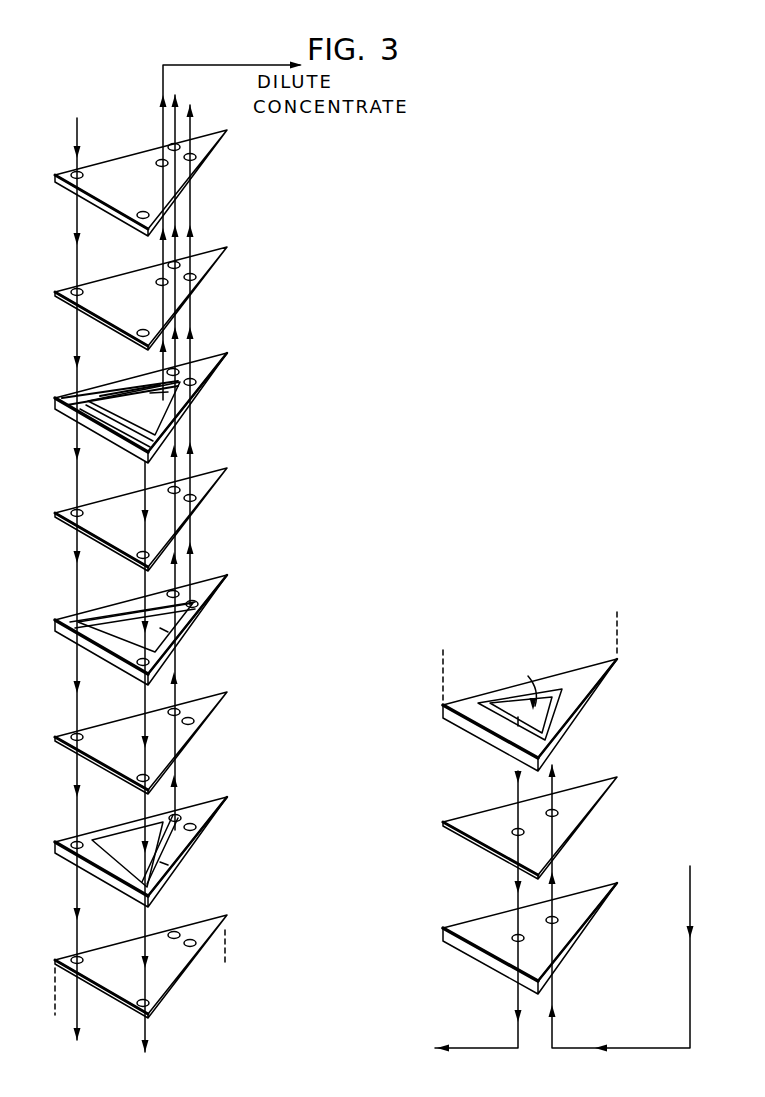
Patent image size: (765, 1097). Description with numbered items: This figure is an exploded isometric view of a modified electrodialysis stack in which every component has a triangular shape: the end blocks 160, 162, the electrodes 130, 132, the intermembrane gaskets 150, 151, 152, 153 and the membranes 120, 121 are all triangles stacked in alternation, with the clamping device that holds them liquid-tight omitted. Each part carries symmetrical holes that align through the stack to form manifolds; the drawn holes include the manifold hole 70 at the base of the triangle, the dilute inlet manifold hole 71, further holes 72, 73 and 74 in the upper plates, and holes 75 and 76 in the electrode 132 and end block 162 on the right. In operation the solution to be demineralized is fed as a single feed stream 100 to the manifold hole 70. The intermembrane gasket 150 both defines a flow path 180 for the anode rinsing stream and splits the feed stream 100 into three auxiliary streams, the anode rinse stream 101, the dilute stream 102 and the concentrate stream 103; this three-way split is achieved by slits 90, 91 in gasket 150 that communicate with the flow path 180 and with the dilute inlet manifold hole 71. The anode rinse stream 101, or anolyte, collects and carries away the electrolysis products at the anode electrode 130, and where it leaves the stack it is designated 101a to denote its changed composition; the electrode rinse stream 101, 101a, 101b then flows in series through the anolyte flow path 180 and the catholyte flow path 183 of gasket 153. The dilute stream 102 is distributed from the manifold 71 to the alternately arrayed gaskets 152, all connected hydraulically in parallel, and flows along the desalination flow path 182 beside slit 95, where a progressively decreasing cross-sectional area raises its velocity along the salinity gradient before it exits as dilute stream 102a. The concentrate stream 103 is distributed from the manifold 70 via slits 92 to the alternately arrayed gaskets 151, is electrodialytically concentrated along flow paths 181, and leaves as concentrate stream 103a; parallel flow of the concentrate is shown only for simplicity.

The manifold hole 70 is at (83, 175).
The dilute inlet manifold hole 71 is at (143, 213).
The aperture 72 is at (168, 147).
The aperture 73 is at (196, 157).
The aperture 74 is at (160, 166).
The aperture 75 is at (548, 818).
The aperture 76 is at (512, 938).
The slit 90 is at (78, 398).
The slit 91 is at (95, 412).
The slit 92 is at (78, 622).
The flow channel 95 is at (180, 850).
The feed stream 100 is at (77, 124).
The anode rinse stream 101 is at (120, 392).
The anode rinse stream outlet 101a is at (163, 124).
The electrode rinse stream 101b is at (493, 1046).
The dilute stream 102 is at (145, 481).
The dilute stream outlet 102a is at (178, 100).
The concentrate stream 103 is at (77, 484).
The concentrate stream outlet 103a is at (192, 118).
The membrane 120 is at (222, 470).
The membrane 121 is at (222, 705).
The electrode 130 is at (224, 246).
The electrode 132 is at (580, 810).
The intermembrane gasket 150 is at (222, 358).
The intermembrane gasket 151 is at (226, 580).
The intermembrane gasket 152 is at (222, 812).
The intermembrane gasket 153 is at (600, 666).
The end block 160 is at (222, 145).
The end block 162 is at (580, 914).
The anolyte flow path 180 is at (170, 395).
The concentrate flow path 181 is at (165, 632).
The desalination flow path 182 is at (168, 865).
The catholyte flow path 183 is at (565, 697).